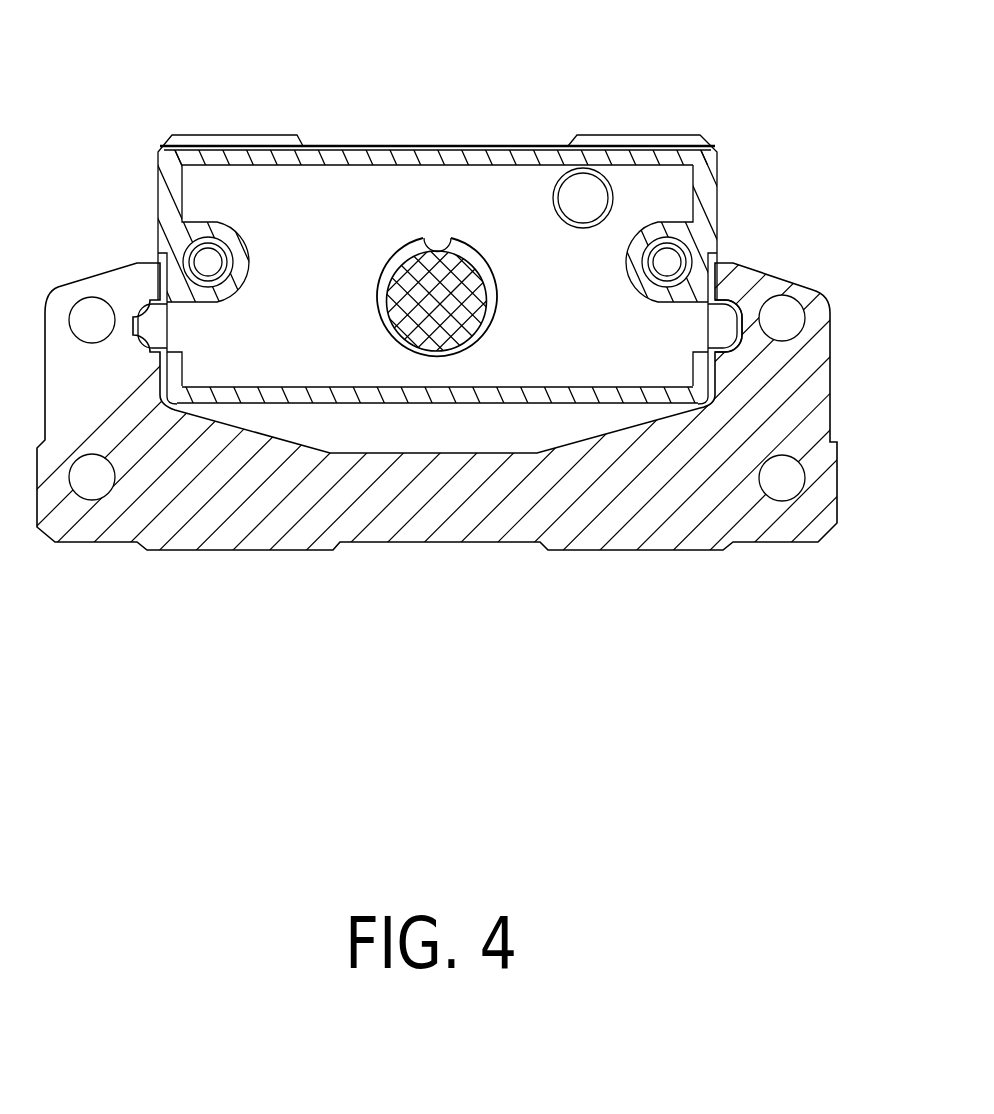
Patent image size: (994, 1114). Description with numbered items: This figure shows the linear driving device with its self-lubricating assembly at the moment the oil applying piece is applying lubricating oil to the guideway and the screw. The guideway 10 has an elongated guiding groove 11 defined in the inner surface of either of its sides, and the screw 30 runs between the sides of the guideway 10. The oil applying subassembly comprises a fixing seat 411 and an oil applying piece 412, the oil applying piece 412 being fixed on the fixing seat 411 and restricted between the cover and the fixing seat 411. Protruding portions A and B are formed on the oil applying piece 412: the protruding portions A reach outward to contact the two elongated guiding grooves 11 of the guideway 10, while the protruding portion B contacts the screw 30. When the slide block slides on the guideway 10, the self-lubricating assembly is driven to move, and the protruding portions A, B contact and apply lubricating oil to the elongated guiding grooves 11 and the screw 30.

The guideway 10 is at (660, 512).
The elongated guiding groove 11 is at (742, 347).
The screw 30 is at (435, 305).
The fixing seat 411 is at (582, 158).
The oil applying piece 412 is at (507, 132).
The protruding portion A is at (713, 327).
The protruding portion B is at (437, 247).